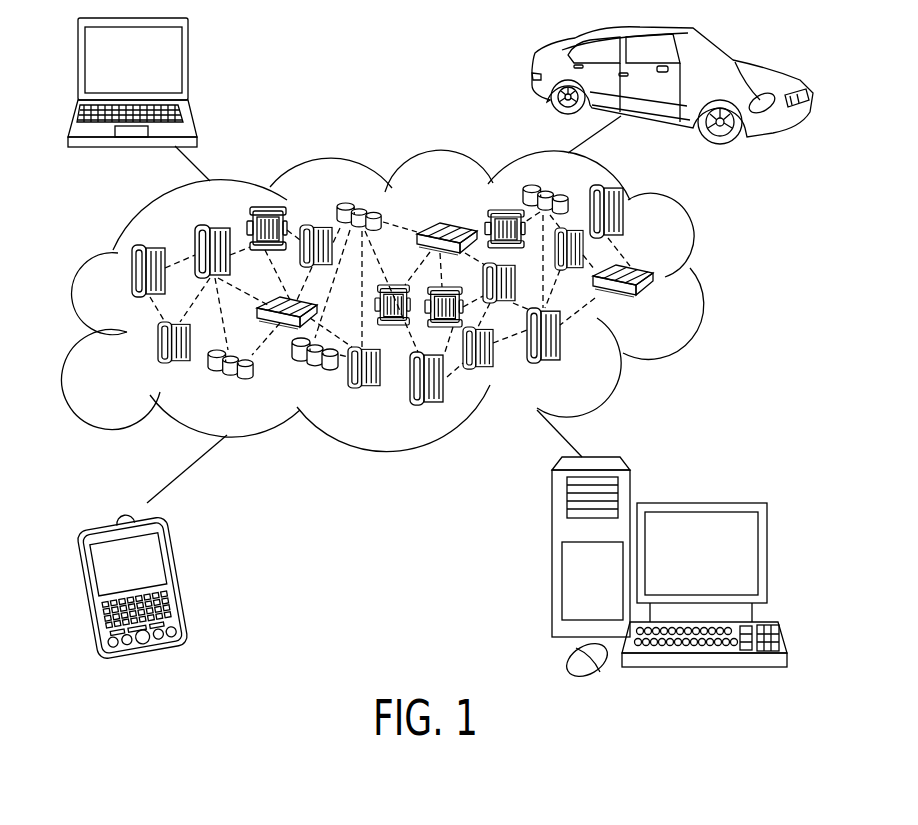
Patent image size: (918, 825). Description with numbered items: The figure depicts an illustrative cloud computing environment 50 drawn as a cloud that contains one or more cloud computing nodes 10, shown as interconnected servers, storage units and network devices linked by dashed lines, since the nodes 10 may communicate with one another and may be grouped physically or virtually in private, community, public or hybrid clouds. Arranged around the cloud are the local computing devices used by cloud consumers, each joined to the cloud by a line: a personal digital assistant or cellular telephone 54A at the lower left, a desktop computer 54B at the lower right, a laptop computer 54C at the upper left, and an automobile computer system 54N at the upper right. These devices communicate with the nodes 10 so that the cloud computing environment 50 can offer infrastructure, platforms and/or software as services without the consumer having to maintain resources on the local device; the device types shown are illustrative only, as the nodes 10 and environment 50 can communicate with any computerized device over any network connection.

The cloud computing node 10 is at (714, 295).
The cloud computing environment 50 is at (702, 278).
The personal digital assistant or cellular telephone 54A is at (177, 573).
The desktop computer 54B is at (700, 503).
The laptop computer 54C is at (188, 68).
The automobile computer system 54N is at (530, 80).